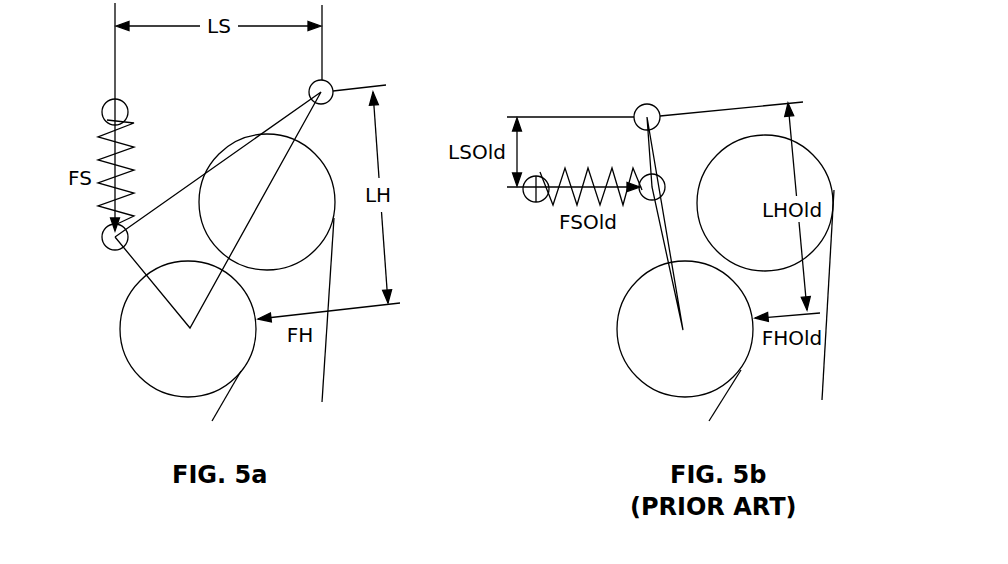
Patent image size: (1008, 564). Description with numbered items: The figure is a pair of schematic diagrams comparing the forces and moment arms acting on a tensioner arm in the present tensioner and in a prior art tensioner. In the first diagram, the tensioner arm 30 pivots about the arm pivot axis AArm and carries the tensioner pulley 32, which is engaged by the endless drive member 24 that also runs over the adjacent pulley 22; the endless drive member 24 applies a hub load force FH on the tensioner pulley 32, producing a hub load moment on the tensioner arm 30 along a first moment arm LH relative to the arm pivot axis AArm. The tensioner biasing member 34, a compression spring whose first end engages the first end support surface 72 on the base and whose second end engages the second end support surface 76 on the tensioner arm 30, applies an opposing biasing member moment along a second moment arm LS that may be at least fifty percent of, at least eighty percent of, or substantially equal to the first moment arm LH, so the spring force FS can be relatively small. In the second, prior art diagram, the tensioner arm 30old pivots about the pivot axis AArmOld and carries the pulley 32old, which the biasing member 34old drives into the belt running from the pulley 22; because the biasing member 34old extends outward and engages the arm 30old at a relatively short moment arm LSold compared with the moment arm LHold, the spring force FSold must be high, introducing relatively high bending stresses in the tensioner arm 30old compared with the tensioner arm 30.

In FIG. 5a, the upper roller 22 is at (233, 147).
In FIG. 5b, the upper roller 22 is at (817, 168).
In FIG. 5a, the endless drive member 24 is at (324, 372).
In FIG. 5b, the endless drive member 24 is at (825, 365).
In FIG. 5a, the tensioner arm 30 is at (140, 255).
In FIG. 5a, the tensioner pulley 32 is at (128, 348).
In FIG. 5a, the tensioner biasing member 34 is at (102, 139).
In FIG. 5a, the first end support surface 72 is at (110, 108).
In FIG. 5a, the second end support surface 76 is at (108, 246).
In FIG. 5a, the arm pivot axis AArm is at (330, 84).
In FIG. 5b, the arm pivot axis AArmOld is at (640, 108).
In FIG. 5b, the tensioner arm 30old is at (663, 237).
In FIG. 5b, the pulley 32old is at (632, 358).
In FIG. 5b, the tensioner biasing member 34old is at (550, 203).